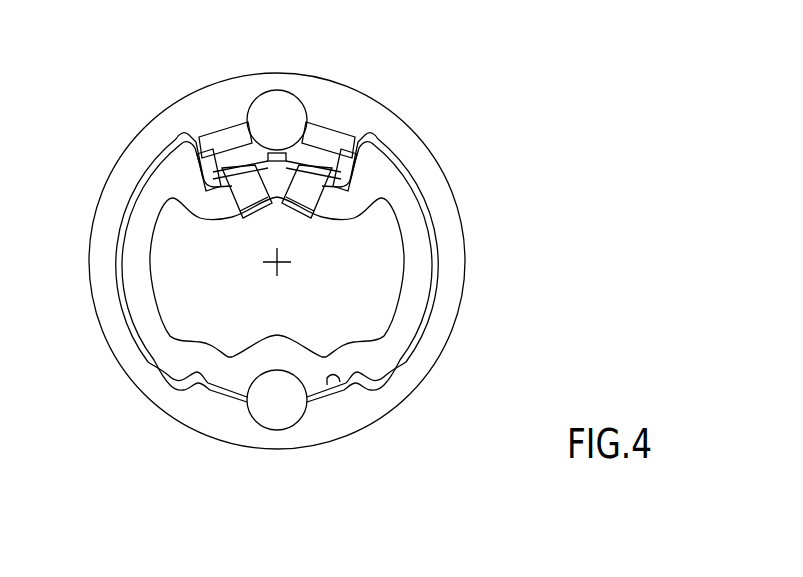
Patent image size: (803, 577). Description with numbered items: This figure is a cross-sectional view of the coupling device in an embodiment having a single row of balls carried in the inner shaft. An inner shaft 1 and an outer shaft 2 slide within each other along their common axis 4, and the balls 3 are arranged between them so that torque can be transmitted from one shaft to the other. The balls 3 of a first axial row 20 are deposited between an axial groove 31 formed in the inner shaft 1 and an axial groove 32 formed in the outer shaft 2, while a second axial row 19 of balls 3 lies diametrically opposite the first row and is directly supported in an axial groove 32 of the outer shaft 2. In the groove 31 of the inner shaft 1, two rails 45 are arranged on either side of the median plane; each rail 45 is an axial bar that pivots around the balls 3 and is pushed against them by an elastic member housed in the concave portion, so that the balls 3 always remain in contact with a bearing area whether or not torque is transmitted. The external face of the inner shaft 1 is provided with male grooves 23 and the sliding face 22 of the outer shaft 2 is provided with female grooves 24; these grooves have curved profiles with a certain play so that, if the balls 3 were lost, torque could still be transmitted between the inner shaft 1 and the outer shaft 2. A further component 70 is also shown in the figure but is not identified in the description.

The inner shaft 1 is at (137, 267).
The outer shaft 2 is at (450, 243).
The balls 3 is at (295, 108).
The common axis 4 is at (281, 266).
The second axial row 19 is at (290, 410).
The first axial row 20 is at (267, 113).
The sliding face 22 is at (277, 432).
The male grooves 23 is at (220, 396).
The female grooves 24 is at (338, 384).
The axial groove 31 is at (360, 187).
The axial groove 32 is at (275, 83).
The rails 45 is at (233, 140).
The spring element 70 is at (228, 140).